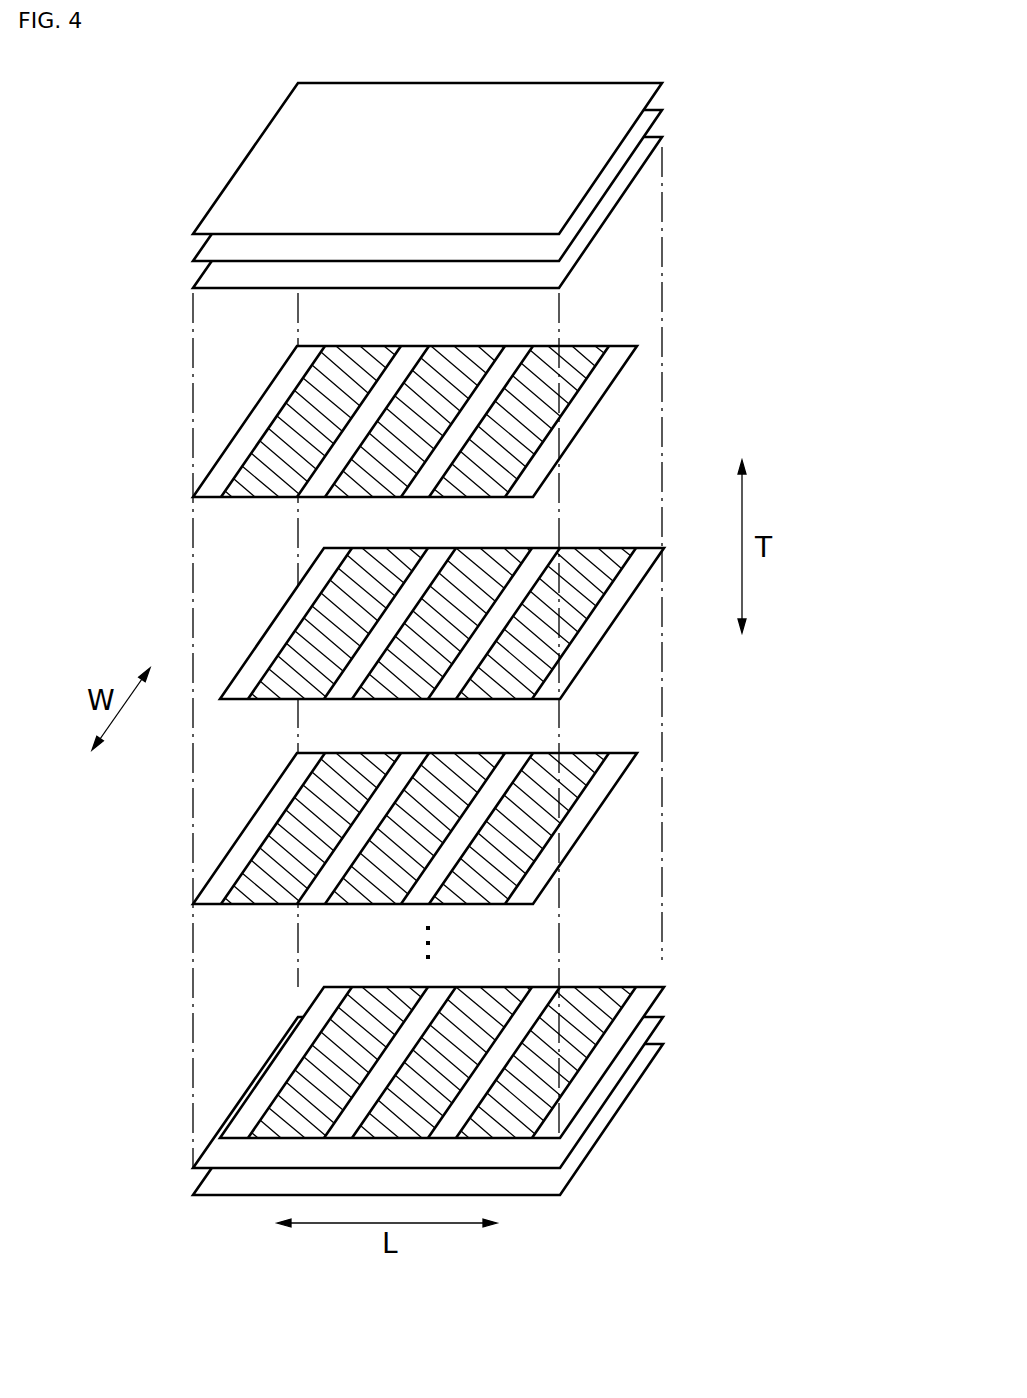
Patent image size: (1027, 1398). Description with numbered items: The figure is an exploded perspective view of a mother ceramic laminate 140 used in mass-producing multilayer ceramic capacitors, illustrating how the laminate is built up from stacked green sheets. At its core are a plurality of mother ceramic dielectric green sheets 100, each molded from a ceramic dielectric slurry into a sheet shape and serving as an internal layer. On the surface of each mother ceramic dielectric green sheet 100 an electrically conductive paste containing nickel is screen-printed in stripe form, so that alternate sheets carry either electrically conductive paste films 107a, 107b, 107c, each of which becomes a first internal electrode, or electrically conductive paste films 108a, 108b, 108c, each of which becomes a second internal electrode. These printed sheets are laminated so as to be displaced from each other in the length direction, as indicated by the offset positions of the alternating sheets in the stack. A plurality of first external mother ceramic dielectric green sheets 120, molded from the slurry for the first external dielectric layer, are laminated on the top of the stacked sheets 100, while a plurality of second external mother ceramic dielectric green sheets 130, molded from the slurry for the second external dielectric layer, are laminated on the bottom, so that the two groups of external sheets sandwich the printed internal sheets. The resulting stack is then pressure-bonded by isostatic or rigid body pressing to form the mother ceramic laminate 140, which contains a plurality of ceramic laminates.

The mother ceramic laminate 140 is at (222, 93).
The first external mother ceramic dielectric green sheet 120 is at (660, 145).
The second external mother ceramic dielectric green sheet 130 is at (658, 1053).
The mother ceramic dielectric green sheet 100 is at (587, 420).
The electrically conductive paste film 107a is at (348, 362).
The electrically conductive paste film 107b is at (457, 362).
The electrically conductive paste film 107c is at (583, 362).
The electrically conductive paste film 108a is at (370, 572).
The electrically conductive paste film 108b is at (478, 572).
The electrically conductive paste film 108c is at (587, 572).